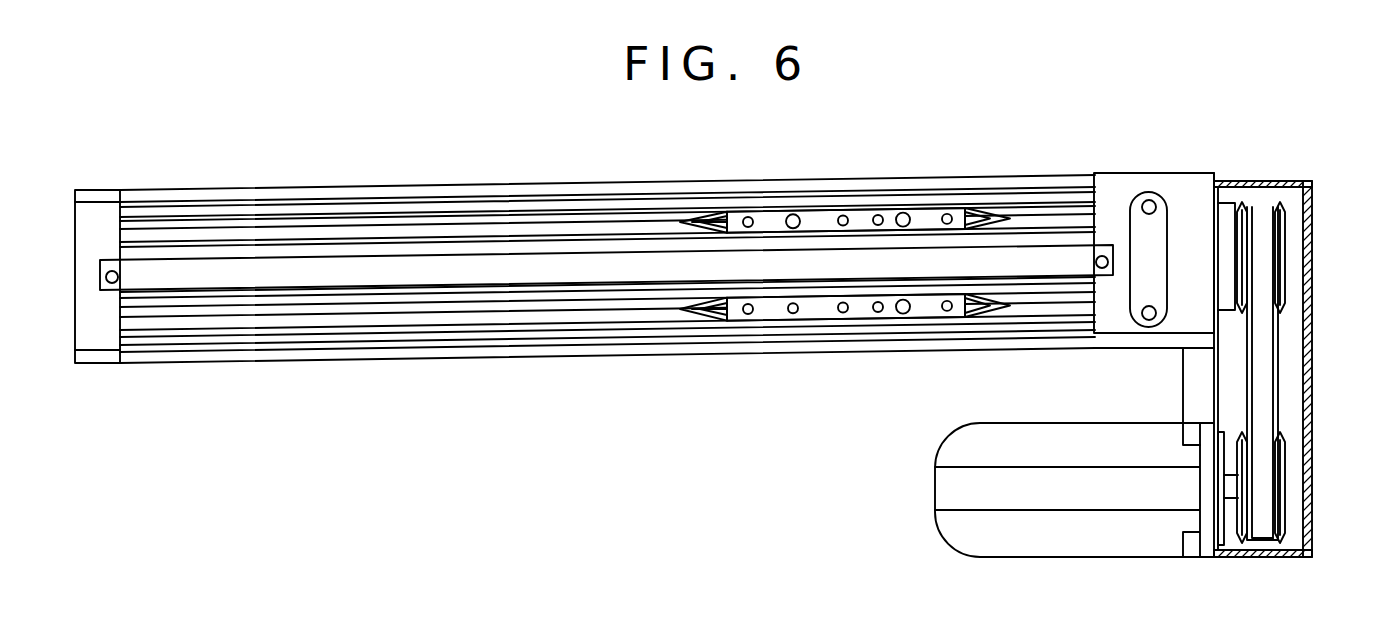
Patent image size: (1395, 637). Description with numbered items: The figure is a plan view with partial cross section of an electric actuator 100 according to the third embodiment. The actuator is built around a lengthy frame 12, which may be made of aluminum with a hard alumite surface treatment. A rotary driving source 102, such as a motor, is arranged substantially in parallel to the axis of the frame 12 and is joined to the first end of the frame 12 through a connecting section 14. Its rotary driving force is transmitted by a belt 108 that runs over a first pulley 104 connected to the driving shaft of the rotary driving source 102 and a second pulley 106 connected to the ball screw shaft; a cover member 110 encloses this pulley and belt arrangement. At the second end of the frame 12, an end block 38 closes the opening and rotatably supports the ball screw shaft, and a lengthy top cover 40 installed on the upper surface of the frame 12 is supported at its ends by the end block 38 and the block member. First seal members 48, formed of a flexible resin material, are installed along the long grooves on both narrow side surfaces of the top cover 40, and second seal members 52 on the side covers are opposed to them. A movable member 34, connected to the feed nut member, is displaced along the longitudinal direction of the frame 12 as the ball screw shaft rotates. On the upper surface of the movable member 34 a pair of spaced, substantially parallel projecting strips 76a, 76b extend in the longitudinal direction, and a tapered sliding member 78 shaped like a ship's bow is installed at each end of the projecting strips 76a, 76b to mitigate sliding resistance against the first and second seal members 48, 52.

The electric actuator 100 is at (1150, 70).
The frame 12 is at (745, 175).
The connecting section 14 is at (1159, 168).
The movable member 34 is at (921, 204).
The end block 38 is at (100, 333).
The top cover 40 is at (406, 268).
The first seal members 48 is at (302, 225).
The second seal members 52 is at (512, 215).
The projecting strip 76a is at (818, 212).
The projecting strip 76b is at (818, 316).
The sliding member 78 is at (720, 210).
The rotary driving source 102 is at (1088, 566).
The first pulley 104 is at (1280, 487).
The second pulley 106 is at (1282, 258).
The belt 108 is at (1263, 377).
The cover member 110 is at (1310, 205).